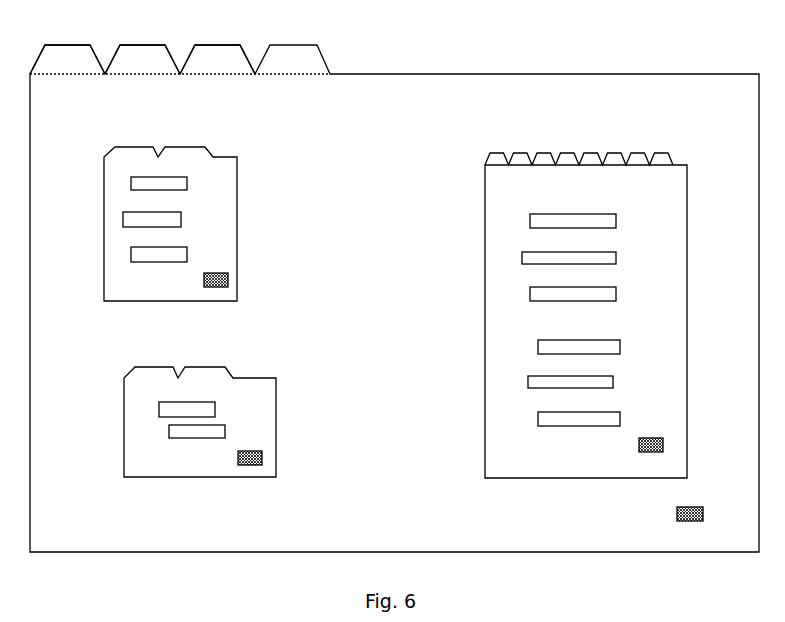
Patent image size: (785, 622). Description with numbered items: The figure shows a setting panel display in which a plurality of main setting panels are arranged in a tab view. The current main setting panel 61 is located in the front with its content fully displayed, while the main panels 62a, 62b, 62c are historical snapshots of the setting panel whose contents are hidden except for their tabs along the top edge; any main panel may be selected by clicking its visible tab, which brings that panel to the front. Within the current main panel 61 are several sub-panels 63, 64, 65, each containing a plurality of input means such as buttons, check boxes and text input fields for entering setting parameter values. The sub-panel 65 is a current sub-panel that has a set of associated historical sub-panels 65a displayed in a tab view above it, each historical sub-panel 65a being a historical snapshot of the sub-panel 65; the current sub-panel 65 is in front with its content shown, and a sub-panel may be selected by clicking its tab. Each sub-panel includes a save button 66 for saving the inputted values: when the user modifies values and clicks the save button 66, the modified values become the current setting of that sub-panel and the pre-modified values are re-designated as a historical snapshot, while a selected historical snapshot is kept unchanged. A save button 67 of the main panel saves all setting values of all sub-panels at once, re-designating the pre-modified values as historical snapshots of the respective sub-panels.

The current main setting panel 61 is at (423, 95).
The historical main setting panel 62a is at (215, 55).
The historical main setting panel 62b is at (143, 55).
The historical main setting panel 62c is at (70, 55).
The sub-panel 63 is at (228, 233).
The sub-panel 64 is at (253, 397).
The current sub-panel 65 is at (505, 308).
The historical sub-panels 65a is at (568, 157).
The save button 66 is at (228, 282).
The save button of the main panel 67 is at (693, 522).